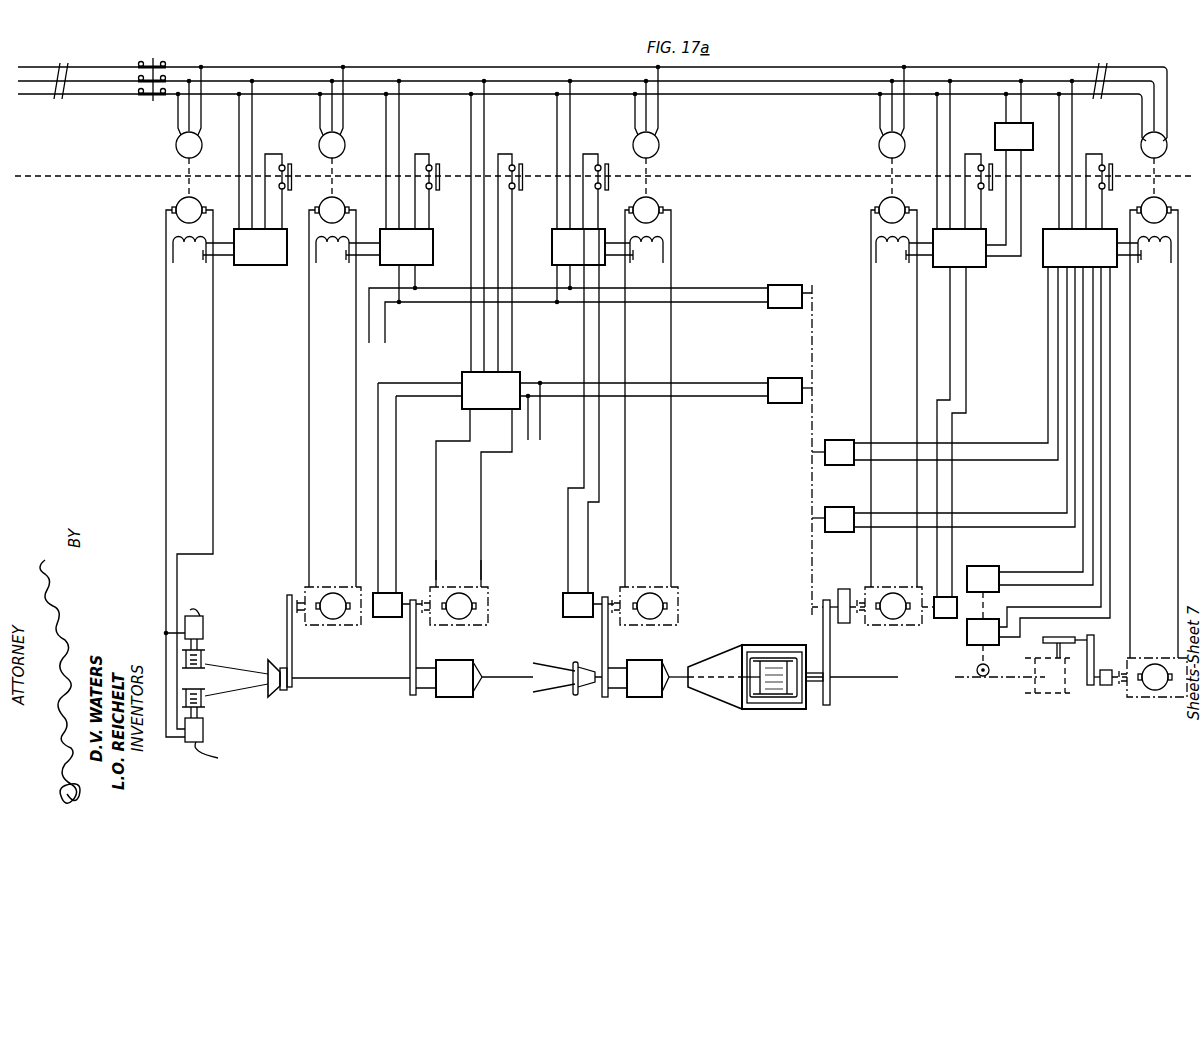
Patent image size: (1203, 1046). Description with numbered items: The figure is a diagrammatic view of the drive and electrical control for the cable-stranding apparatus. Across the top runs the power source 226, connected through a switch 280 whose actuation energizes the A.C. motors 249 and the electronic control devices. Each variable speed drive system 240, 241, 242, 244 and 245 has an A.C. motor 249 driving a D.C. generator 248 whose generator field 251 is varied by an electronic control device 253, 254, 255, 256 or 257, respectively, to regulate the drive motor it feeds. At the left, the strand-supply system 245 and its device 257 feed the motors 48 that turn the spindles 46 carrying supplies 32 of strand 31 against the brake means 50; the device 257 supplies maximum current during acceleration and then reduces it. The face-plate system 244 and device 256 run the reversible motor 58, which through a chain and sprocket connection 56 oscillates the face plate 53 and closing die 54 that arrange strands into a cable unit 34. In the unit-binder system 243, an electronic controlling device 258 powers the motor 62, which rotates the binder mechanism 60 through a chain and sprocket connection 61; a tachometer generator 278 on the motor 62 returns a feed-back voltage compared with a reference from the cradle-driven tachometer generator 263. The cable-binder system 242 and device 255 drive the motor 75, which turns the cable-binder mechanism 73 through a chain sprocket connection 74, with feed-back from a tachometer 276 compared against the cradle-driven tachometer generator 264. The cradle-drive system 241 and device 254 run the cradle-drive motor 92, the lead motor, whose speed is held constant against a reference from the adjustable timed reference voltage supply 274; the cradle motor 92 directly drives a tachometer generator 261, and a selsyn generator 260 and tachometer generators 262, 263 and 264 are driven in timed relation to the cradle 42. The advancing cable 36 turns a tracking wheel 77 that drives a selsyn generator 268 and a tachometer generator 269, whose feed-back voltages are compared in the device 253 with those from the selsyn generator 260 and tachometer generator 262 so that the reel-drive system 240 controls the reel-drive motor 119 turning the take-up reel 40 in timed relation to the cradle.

The power source 226 is at (56, 68).
The switch 280 is at (151, 62).
The A.C. motor 249 is at (185, 145).
The D.C. generator 248 is at (190, 209).
The electronic control device 257 is at (263, 173).
The electronic control device 256 is at (410, 191).
The electronic control device 255 is at (580, 191).
The electronic control device 254 is at (963, 339).
The electronic control device 253 is at (985, 359).
The adjustable timed reference voltage supply 274 is at (1009, 168).
The generator field 251 is at (1160, 266).
The electronic controlling device 258 is at (573, 334).
The tachometer generator 264 is at (785, 308).
The tachometer generator 263 is at (785, 403).
The tachometer generator 262 is at (839, 465).
The selsyn generator 260 is at (839, 532).
The tachometer generator 269 is at (983, 566).
The selsyn generator 268 is at (967, 645).
The tachometer generator 261 is at (946, 618).
The cable-drive system 241 is at (859, 372).
The drive system 242 is at (683, 479).
The D.C. drive system 243 is at (494, 565).
The variable speed drive system 244 is at (297, 371).
The D.C. drive system 245 is at (248, 402).
The tachometer 276 is at (563, 604).
The tachometer generator 278 is at (387, 617).
The reversible motor 58 is at (333, 620).
The chain and sprocket connection 61 is at (410, 645).
The motor 62 is at (459, 620).
The chain sprocket connection 74 is at (602, 638).
The drive motor 75 is at (650, 619).
The cable-binder mechanism 73 is at (637, 697).
The binder mechanism 60 is at (463, 697).
The cradle-drive motor 92 is at (893, 619).
The chain and sprocket connection 56 is at (287, 610).
The oscillatable face plate 53 is at (268, 662).
The closing die 54 is at (284, 690).
The cable unit 34 is at (378, 684).
The cable 36 is at (680, 686).
The cradle 42 is at (732, 712).
The motor 48 is at (217, 676).
The spindle 46 is at (204, 622).
The brake means 50 is at (200, 643).
The strand 31 is at (245, 665).
The supply 32 is at (206, 660).
The take-up reel 40 is at (1022, 672).
The tracking wheel 77 is at (978, 675).
The reel-drive system 240 is at (1124, 650).
The reel-drive motor 119 is at (1154, 691).